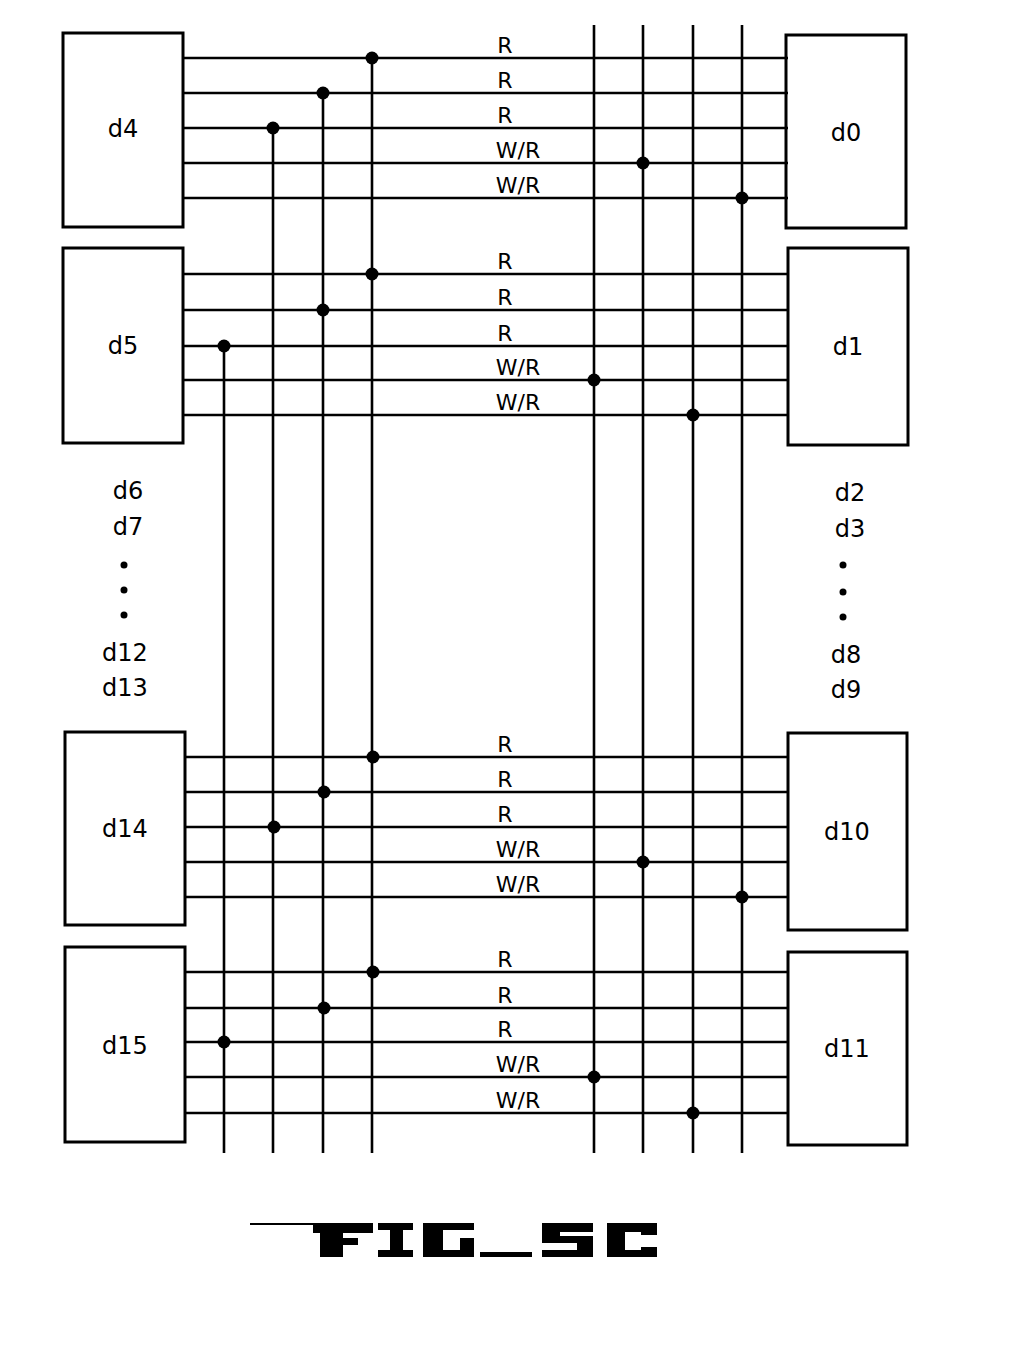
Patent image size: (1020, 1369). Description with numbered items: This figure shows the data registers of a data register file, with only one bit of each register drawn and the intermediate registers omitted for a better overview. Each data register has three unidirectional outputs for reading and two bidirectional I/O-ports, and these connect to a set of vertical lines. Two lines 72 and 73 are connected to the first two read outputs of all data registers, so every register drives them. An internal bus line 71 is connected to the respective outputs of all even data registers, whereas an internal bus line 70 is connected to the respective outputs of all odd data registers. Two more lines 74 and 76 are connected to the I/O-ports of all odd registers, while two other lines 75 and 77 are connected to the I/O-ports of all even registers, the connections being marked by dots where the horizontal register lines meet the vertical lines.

The internal bus line 70 is at (224, 545).
The internal bus line 71 is at (273, 588).
The line 72 is at (323, 630).
The line 73 is at (372, 672).
The line 74 is at (594, 545).
The line 75 is at (643, 588).
The line 76 is at (693, 630).
The line 77 is at (742, 672).